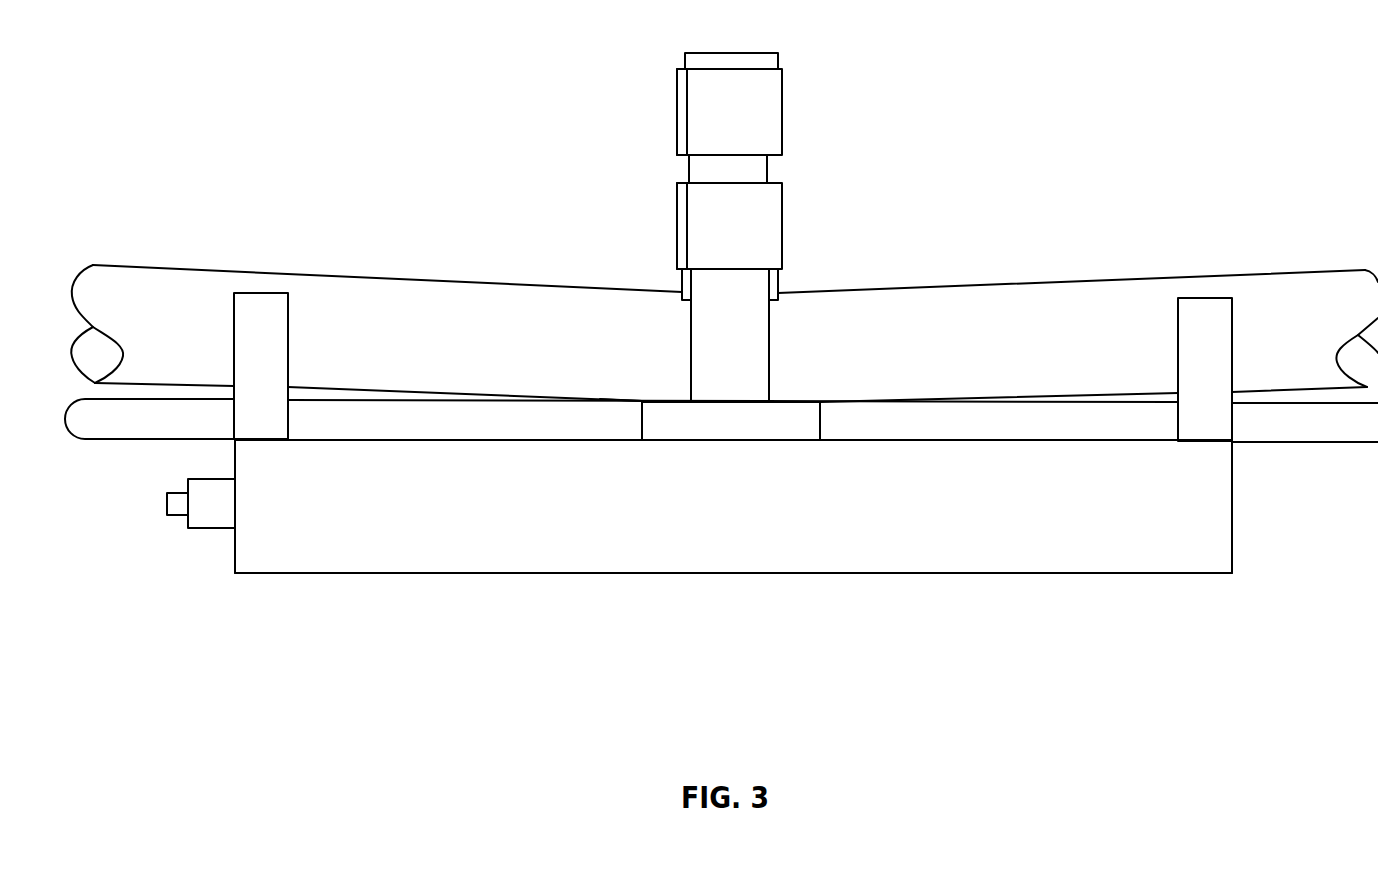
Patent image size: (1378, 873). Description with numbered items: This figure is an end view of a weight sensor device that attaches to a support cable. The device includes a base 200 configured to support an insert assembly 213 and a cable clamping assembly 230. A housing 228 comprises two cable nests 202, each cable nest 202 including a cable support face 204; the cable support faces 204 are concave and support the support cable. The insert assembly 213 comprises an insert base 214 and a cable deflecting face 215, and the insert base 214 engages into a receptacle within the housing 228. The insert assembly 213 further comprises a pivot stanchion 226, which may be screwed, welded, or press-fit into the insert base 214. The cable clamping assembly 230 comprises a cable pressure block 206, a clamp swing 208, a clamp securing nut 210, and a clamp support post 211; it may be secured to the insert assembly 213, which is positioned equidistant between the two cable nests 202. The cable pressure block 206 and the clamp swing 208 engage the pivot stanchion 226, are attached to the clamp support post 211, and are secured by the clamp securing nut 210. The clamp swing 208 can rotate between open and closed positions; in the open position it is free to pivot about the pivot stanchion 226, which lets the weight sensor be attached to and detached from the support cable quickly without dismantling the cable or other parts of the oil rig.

The base 200 is at (798, 573).
The cable nest 202 is at (234, 335).
The cable support face 204 is at (261, 293).
The cable pressure block 206 is at (767, 228).
The clamp swing 208 is at (763, 112).
The clamp securing nut 210 is at (778, 62).
The clamp support post 211 is at (700, 167).
The insert assembly 213 is at (670, 390).
The insert base 214 is at (787, 426).
The cable deflecting face 215 is at (773, 400).
The pivot stanchion 226 is at (713, 333).
The housing 228 is at (502, 533).
The cable clamping assembly 230 is at (663, 87).